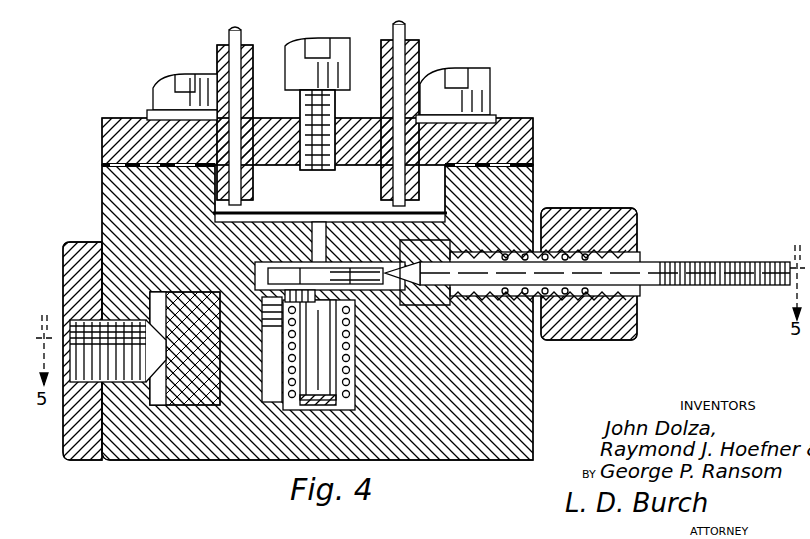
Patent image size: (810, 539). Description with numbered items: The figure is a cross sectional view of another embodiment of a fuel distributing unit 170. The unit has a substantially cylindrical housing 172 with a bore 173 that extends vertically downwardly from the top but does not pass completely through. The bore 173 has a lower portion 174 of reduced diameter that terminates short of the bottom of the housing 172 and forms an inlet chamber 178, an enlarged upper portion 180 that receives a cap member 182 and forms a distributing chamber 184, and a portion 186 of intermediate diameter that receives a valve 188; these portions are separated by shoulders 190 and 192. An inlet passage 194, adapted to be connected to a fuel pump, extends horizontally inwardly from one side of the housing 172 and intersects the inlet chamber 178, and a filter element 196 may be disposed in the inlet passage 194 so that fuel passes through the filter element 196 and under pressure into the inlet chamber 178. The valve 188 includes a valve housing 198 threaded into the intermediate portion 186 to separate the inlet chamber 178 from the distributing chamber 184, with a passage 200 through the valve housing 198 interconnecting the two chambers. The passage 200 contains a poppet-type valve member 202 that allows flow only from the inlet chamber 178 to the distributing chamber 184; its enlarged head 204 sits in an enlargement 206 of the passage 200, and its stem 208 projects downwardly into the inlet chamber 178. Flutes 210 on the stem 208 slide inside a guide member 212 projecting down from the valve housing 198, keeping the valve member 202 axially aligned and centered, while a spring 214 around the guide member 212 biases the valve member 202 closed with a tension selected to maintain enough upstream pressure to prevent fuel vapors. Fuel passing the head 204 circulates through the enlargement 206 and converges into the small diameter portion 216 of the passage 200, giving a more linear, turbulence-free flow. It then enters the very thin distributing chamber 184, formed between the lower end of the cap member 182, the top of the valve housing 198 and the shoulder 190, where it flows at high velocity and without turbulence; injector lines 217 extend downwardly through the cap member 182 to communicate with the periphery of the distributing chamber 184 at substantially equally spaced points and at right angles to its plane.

The distributing unit 170 is at (538, 140).
The housing 172 is at (512, 404).
The bore 173 is at (190, 206).
The lower portion 174 is at (368, 350).
The inlet chamber 178 is at (282, 412).
The enlarged upper portion 180 is at (446, 202).
The cap member 182 is at (508, 118).
The distributing chamber 184 is at (262, 212).
The portion of intermediate diameter 186 is at (258, 230).
The valve 188 is at (275, 290).
The shoulder 190 is at (466, 215).
The shoulder 192 is at (378, 300).
The inlet passage 194 is at (68, 322).
The filter element 196 is at (222, 398).
The valve housing 198 is at (268, 272).
The passage 200 is at (330, 238).
The valve member 202 is at (368, 284).
The enlarged head 204 is at (319, 355).
The enlargement 206 is at (312, 240).
The stem 208 is at (330, 405).
The flutes 210 is at (280, 352).
The guide member 212 is at (358, 340).
The spring 214 is at (362, 382).
The small diameter portion 216 is at (327, 147).
The injector lines 217 is at (228, 46).